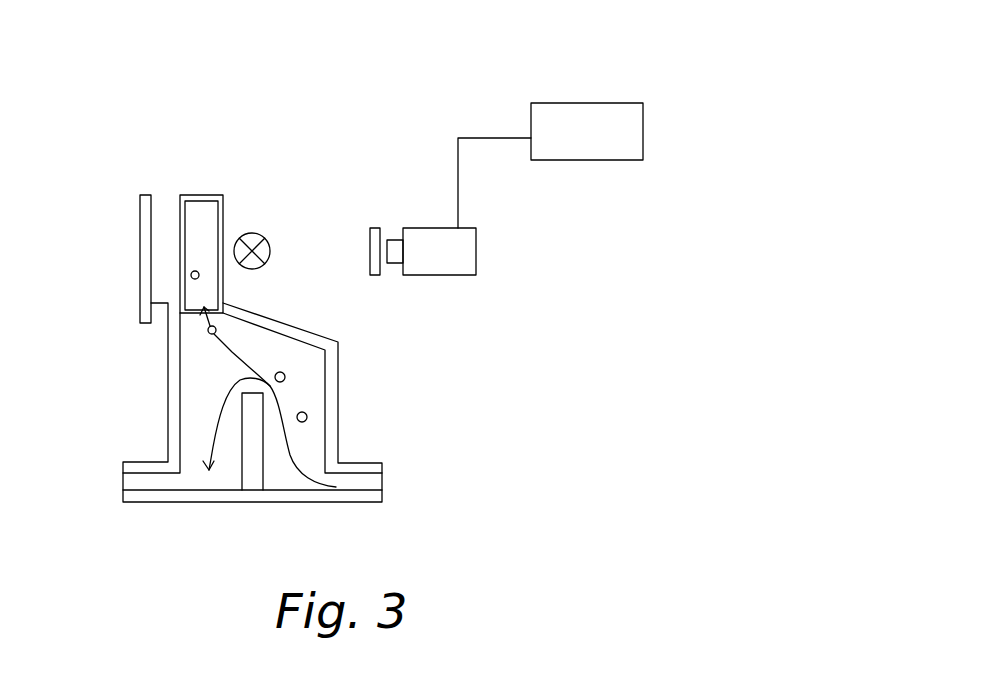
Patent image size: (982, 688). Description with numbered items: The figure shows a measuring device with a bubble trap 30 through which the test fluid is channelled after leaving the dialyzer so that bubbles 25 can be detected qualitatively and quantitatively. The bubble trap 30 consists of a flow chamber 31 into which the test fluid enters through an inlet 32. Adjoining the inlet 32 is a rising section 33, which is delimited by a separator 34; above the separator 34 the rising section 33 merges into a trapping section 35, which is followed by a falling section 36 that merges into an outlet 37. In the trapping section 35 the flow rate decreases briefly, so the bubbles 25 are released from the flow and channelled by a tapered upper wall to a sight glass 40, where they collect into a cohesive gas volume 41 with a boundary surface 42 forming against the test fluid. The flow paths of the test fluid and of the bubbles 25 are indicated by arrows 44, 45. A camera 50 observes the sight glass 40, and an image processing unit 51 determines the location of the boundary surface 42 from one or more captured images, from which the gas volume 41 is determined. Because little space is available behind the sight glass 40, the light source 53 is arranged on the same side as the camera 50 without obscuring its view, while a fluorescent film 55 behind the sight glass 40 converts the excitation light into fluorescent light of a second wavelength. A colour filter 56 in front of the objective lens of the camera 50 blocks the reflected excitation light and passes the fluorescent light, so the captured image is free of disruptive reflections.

The bubbles 25 is at (208, 336).
The bubble trap 30 is at (335, 430).
The flow chamber 31 is at (361, 352).
The inlet 32 is at (366, 463).
The rising section 33 is at (310, 443).
The separator 34 is at (250, 452).
The trapping section 35 is at (262, 352).
The falling section 36 is at (190, 413).
The outlet 37 is at (136, 504).
The sight glass 40 is at (187, 204).
The gas volume 41 is at (206, 220).
The boundary surface 42 is at (190, 245).
The arrow 44 is at (213, 447).
The arrow 45 is at (242, 340).
The camera 50 is at (462, 275).
The image processing unit 51 is at (596, 103).
The light source 53 is at (256, 234).
The fluorescent film 55 is at (139, 238).
The colour filter 56 is at (373, 227).